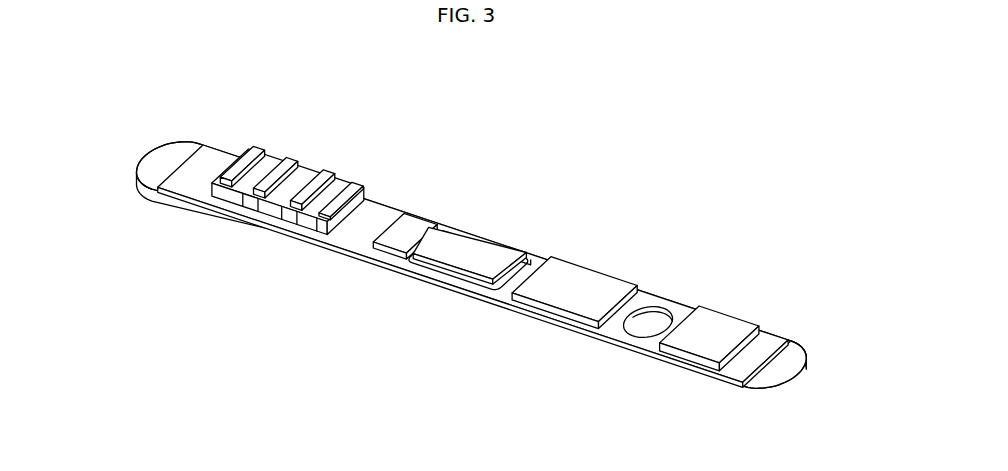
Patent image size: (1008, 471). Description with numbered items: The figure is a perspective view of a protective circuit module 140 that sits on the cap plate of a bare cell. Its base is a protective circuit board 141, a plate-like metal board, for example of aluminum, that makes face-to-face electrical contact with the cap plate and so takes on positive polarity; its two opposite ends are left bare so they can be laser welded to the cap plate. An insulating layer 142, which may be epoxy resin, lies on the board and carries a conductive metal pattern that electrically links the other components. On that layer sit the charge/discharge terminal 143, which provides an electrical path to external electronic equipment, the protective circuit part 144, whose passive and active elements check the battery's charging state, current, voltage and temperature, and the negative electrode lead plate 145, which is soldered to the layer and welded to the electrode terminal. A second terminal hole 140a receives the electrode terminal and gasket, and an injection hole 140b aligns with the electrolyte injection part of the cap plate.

The protective circuit module 140 is at (558, 205).
The second terminal hole 140a is at (468, 275).
The injection hole 140b is at (643, 330).
The protective circuit board 141 is at (145, 199).
The insulating layer 142 is at (213, 157).
The charge/discharge terminal 143 is at (298, 175).
The protective circuit part 144 is at (720, 322).
The negative electrode lead plate 145 is at (408, 228).